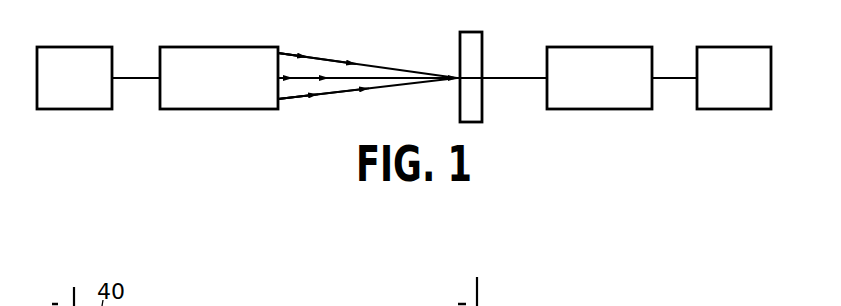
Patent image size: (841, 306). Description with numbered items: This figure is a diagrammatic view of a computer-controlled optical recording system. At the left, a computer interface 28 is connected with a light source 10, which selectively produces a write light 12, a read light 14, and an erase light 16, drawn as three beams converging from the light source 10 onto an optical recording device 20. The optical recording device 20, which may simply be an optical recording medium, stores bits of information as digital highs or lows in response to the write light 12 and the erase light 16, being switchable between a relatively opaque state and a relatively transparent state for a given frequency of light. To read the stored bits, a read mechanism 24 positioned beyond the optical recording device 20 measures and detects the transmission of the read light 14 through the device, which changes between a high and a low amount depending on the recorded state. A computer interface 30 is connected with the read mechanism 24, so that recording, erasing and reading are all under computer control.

The computer interface 28 is at (78, 47).
The light source 10 is at (232, 47).
The write light 12 is at (340, 61).
The read light 14 is at (307, 76).
The erase light 16 is at (311, 97).
The optical recording device 20 is at (483, 47).
The read mechanism 24 is at (580, 46).
The computer interface 30 is at (713, 47).